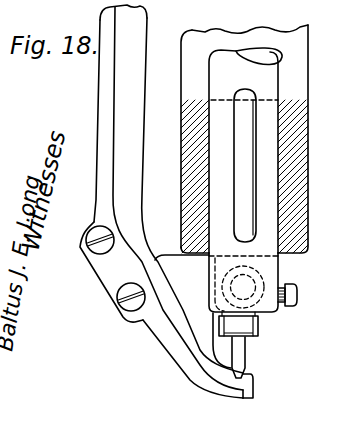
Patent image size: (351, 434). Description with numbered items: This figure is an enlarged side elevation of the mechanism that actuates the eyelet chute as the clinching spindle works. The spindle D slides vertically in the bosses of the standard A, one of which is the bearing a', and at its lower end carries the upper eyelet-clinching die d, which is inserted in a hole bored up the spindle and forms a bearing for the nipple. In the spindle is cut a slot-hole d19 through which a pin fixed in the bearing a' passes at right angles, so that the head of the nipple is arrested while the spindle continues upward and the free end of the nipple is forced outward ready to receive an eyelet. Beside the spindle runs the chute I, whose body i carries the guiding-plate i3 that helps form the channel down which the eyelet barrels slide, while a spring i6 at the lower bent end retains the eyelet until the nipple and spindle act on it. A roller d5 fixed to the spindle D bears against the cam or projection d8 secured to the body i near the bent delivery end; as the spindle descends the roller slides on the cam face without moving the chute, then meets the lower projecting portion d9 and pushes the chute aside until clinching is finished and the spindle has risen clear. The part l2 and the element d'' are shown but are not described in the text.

The standard A is at (309, 48).
The boss a' is at (308, 176).
The cylinder top edge l2 is at (244, 16).
The spindle D is at (245, 150).
The slot-hole d19 is at (252, 165).
The eyelet-clinching die d is at (277, 282).
The roller d5 is at (267, 286).
The cam or projection d8 is at (193, 311).
The valve stem d'' is at (259, 357).
The lower projecting portion of the cam d9 is at (255, 382).
The chute I is at (127, 113).
The body of the chute i is at (178, 198).
The guiding-plate i3 is at (99, 97).
The spring i6 is at (112, 272).